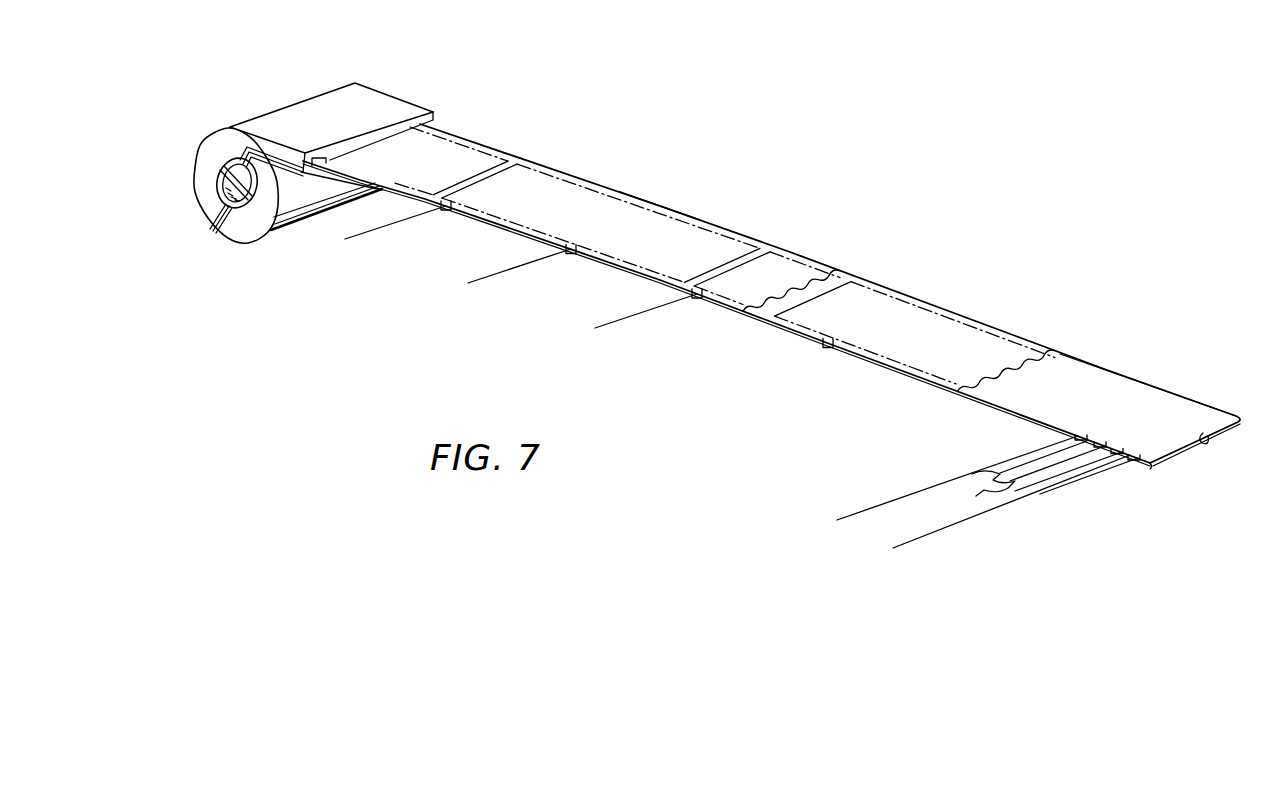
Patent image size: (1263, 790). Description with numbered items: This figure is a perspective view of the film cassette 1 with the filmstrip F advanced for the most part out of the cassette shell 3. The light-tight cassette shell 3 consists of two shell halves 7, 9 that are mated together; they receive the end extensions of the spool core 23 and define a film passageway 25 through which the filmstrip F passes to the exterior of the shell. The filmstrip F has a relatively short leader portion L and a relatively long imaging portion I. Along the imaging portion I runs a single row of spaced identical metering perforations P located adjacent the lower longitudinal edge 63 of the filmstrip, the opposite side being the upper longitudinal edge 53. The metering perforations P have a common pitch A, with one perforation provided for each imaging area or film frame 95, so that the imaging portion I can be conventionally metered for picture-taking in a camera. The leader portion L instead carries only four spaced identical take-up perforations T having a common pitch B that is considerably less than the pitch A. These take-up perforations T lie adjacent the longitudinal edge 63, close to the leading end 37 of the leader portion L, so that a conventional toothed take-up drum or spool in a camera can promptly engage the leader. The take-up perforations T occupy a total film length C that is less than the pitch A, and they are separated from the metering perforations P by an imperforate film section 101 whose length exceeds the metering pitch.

The film cassette 1 is at (287, 160).
The cassette shell 3 is at (220, 124).
The shell half 7 is at (198, 168).
The shell half 9 is at (237, 228).
The spool core 23 is at (222, 197).
The film passageway 25 is at (346, 152).
The film frame 95 is at (546, 170).
The upper longitudinal edge 53 is at (870, 284).
The lower longitudinal edge 63 is at (772, 320).
The imperforate film section 101 is at (948, 396).
The leading end 37 is at (1205, 436).
The filmstrip F is at (771, 281).
The imaging portion I is at (632, 196).
The metering perforations P is at (449, 208).
The pitch of metering perforations A is at (635, 327).
The leader portion L is at (1084, 380).
The take-up perforations T is at (1137, 456).
The pitch of take-up perforations B is at (984, 490).
The total film length of take-up perforations C is at (918, 538).